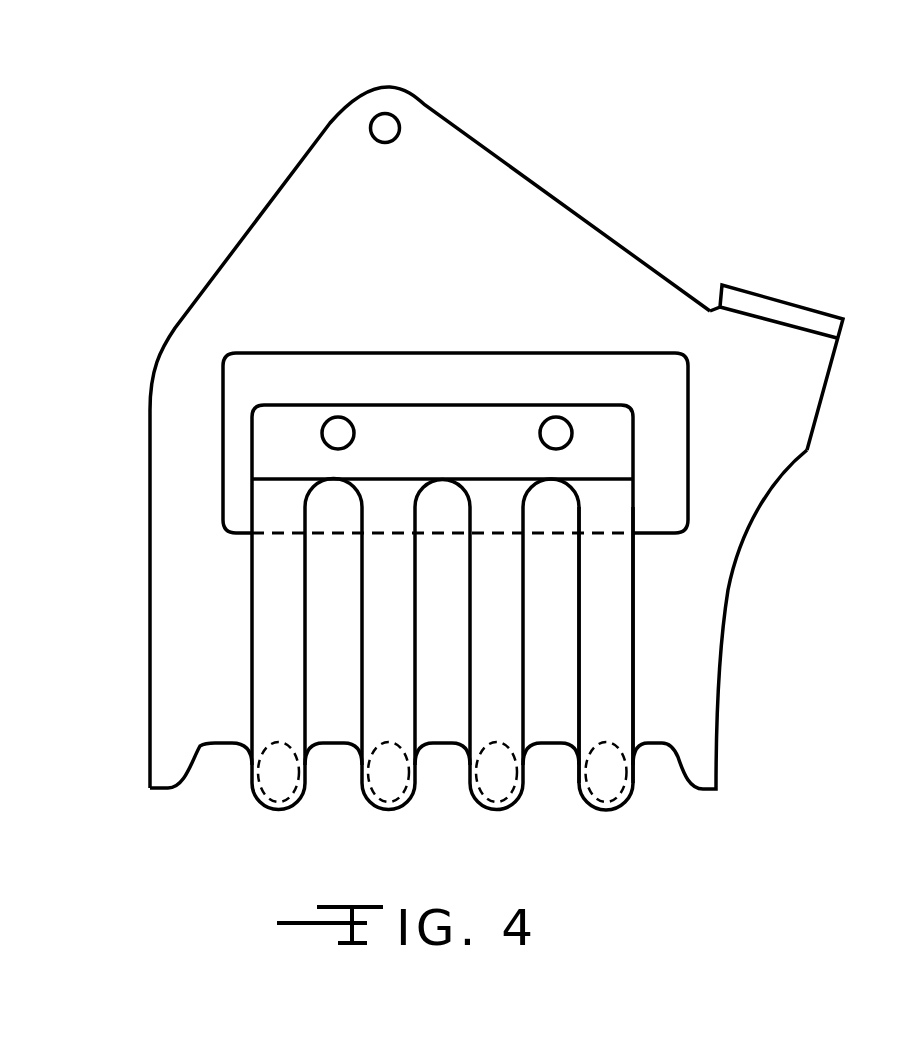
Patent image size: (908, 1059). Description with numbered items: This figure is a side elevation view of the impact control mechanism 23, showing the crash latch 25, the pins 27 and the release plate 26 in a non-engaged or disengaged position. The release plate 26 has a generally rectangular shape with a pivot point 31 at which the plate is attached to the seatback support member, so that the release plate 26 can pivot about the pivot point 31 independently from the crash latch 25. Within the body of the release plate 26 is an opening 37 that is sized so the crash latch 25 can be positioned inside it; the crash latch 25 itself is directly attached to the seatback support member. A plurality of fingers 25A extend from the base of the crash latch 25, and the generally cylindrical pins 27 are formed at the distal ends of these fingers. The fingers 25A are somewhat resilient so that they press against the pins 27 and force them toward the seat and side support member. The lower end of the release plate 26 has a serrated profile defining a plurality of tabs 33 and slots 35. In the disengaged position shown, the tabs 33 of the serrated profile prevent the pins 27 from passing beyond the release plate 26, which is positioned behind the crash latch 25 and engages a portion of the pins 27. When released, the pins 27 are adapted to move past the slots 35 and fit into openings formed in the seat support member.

The impact control mechanism 23 is at (92, 258).
The crash latch 25 is at (496, 641).
The fingers 25A is at (577, 768).
The release plate 26 is at (770, 445).
The pins 27 is at (615, 768).
The pivot point 31 is at (385, 128).
The tabs 33 is at (490, 783).
The slots 35 is at (434, 795).
The opening 37 is at (380, 352).